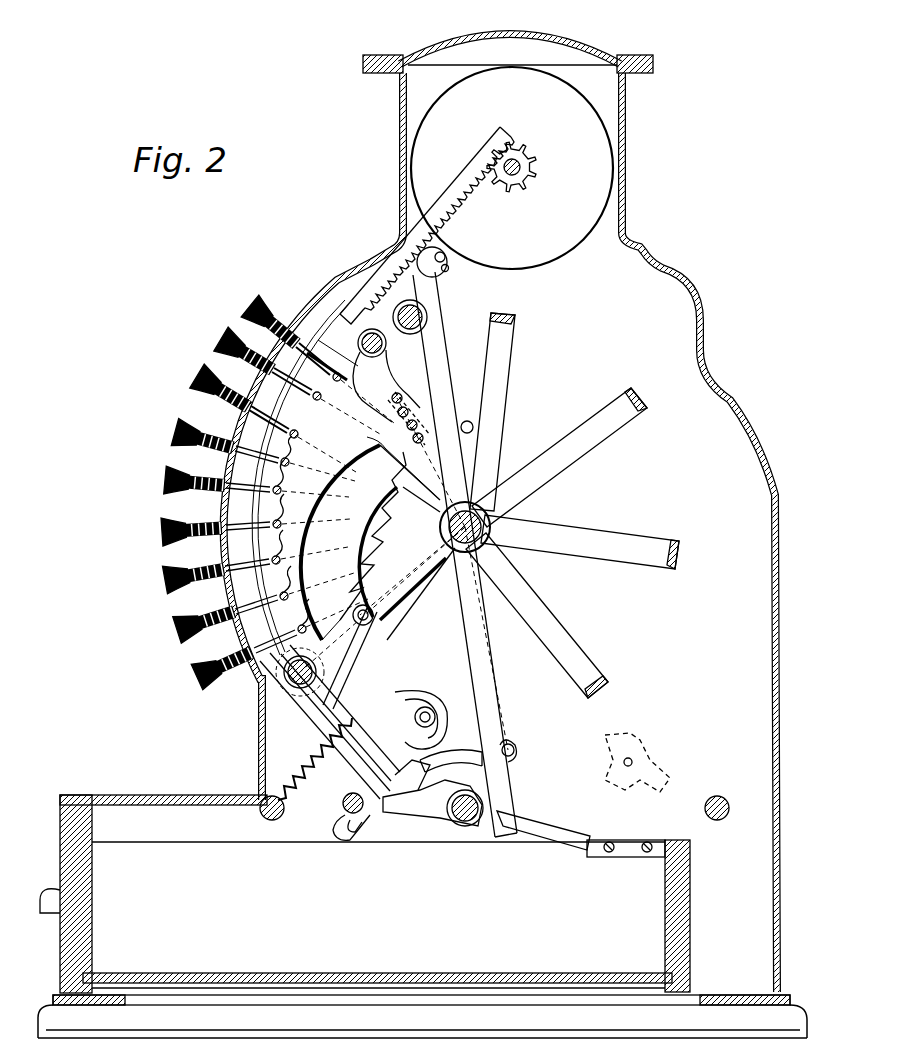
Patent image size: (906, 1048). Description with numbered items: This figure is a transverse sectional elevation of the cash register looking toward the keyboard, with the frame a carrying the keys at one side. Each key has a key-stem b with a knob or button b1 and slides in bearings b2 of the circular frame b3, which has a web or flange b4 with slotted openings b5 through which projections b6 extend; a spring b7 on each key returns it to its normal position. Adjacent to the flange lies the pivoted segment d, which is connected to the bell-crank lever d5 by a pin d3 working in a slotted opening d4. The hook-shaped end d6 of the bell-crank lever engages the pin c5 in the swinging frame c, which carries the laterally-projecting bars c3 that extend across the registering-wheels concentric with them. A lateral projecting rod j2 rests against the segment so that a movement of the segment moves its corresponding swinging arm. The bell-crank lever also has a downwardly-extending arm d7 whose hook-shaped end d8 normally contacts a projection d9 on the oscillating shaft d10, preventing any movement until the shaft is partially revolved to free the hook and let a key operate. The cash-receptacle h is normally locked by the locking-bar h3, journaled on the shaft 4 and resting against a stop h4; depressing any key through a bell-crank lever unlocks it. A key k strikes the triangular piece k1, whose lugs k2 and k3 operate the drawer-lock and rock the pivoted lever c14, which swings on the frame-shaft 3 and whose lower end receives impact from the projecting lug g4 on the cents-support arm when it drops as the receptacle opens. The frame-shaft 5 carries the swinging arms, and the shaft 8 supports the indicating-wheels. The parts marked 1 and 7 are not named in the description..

The frame a is at (745, 430).
The key-stem b is at (322, 340).
The knob or button b1 is at (250, 303).
The bearing b2 is at (220, 345).
The circular frame b3 is at (362, 380).
The web or flange b4 is at (262, 462).
The slotted opening b5 is at (280, 497).
The projection b6 is at (275, 548).
The spring b7 is at (196, 385).
The vibrating or swinging frame c is at (405, 563).
The laterally-projecting bar c3 is at (507, 312).
The pin c5 is at (415, 717).
The pivoted lever c14 is at (492, 665).
The pivoted segment d is at (370, 538).
The pin d3 is at (353, 613).
The slotted opening d4 is at (355, 670).
The bell-crank lever d5 is at (316, 670).
The hook-shaped end d6 is at (438, 692).
The downwardly-extending arm d7 is at (392, 775).
The hook-shaped end d8 is at (340, 832).
The projection d9 is at (338, 815).
The oscillating shaft d10 is at (348, 797).
The cash-receptacle h is at (378, 907).
The locking-bar h3 is at (555, 828).
The stop h4 is at (620, 857).
The lateral projecting rod j2 is at (400, 402).
The key k is at (300, 693).
The triangular piece k1 is at (426, 808).
The lug k2 is at (455, 750).
The lug k3 is at (513, 745).
The pivot pin 1 is at (386, 343).
The frame-shaft 3 is at (480, 513).
The shaft 4 is at (463, 826).
The frame-shaft 5 is at (427, 317).
The pin 7 is at (726, 800).
The shaft 8 is at (520, 167).
The projecting lug g4 is at (632, 762).